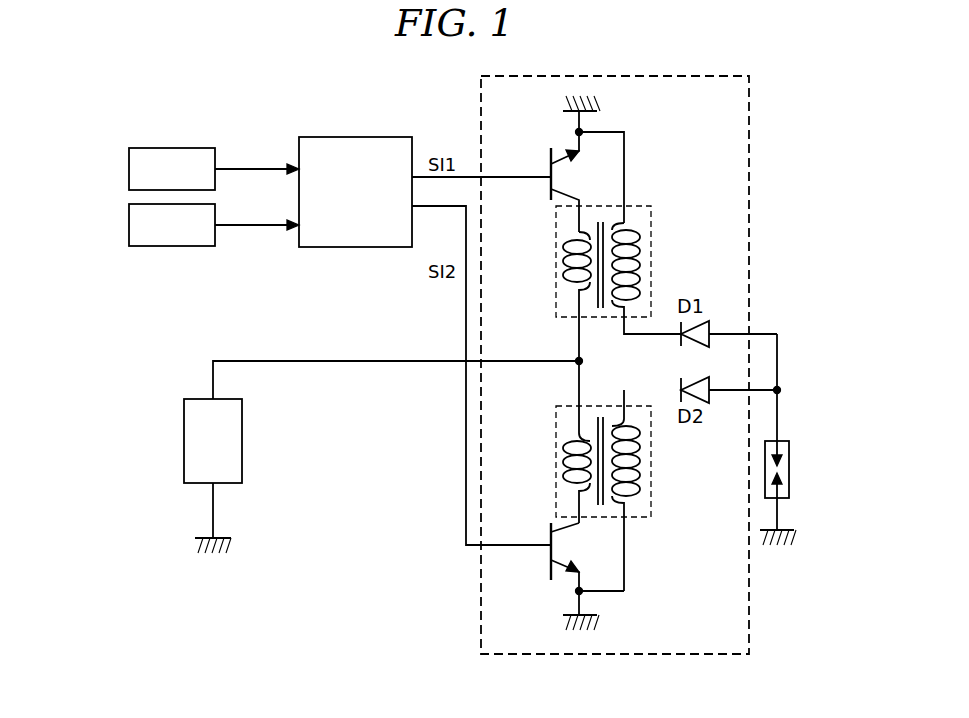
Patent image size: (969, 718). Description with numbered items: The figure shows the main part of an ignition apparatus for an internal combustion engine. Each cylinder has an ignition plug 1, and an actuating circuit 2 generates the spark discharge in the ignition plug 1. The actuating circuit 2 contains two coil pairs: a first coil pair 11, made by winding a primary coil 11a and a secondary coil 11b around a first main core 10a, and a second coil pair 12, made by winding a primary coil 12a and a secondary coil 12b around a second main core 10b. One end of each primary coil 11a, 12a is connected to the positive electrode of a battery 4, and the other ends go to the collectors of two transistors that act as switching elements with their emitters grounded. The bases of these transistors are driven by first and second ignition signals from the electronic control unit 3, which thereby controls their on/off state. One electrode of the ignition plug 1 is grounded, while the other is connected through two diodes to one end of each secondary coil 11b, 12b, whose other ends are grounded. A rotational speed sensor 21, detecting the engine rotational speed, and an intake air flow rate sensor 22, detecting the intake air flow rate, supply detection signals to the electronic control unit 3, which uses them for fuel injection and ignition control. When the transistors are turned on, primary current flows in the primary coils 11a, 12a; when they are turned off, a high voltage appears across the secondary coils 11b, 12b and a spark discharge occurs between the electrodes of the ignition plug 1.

The ignition plug 1 is at (790, 467).
The actuating circuit 2 is at (750, 189).
The electronic control unit 3 is at (336, 137).
The battery 4 is at (243, 430).
The rotational speed sensor 21 is at (129, 169).
The intake air flow rate sensor 22 is at (129, 225).
The first main core 10a is at (600, 225).
The second main core 10b is at (599, 517).
The first coil pair 11 is at (601, 269).
The primary coil 11a is at (564, 258).
The secondary coil 11b is at (641, 262).
The second coil pair 12 is at (601, 476).
The primary coil 12a is at (564, 458).
The secondary coil 12b is at (641, 462).